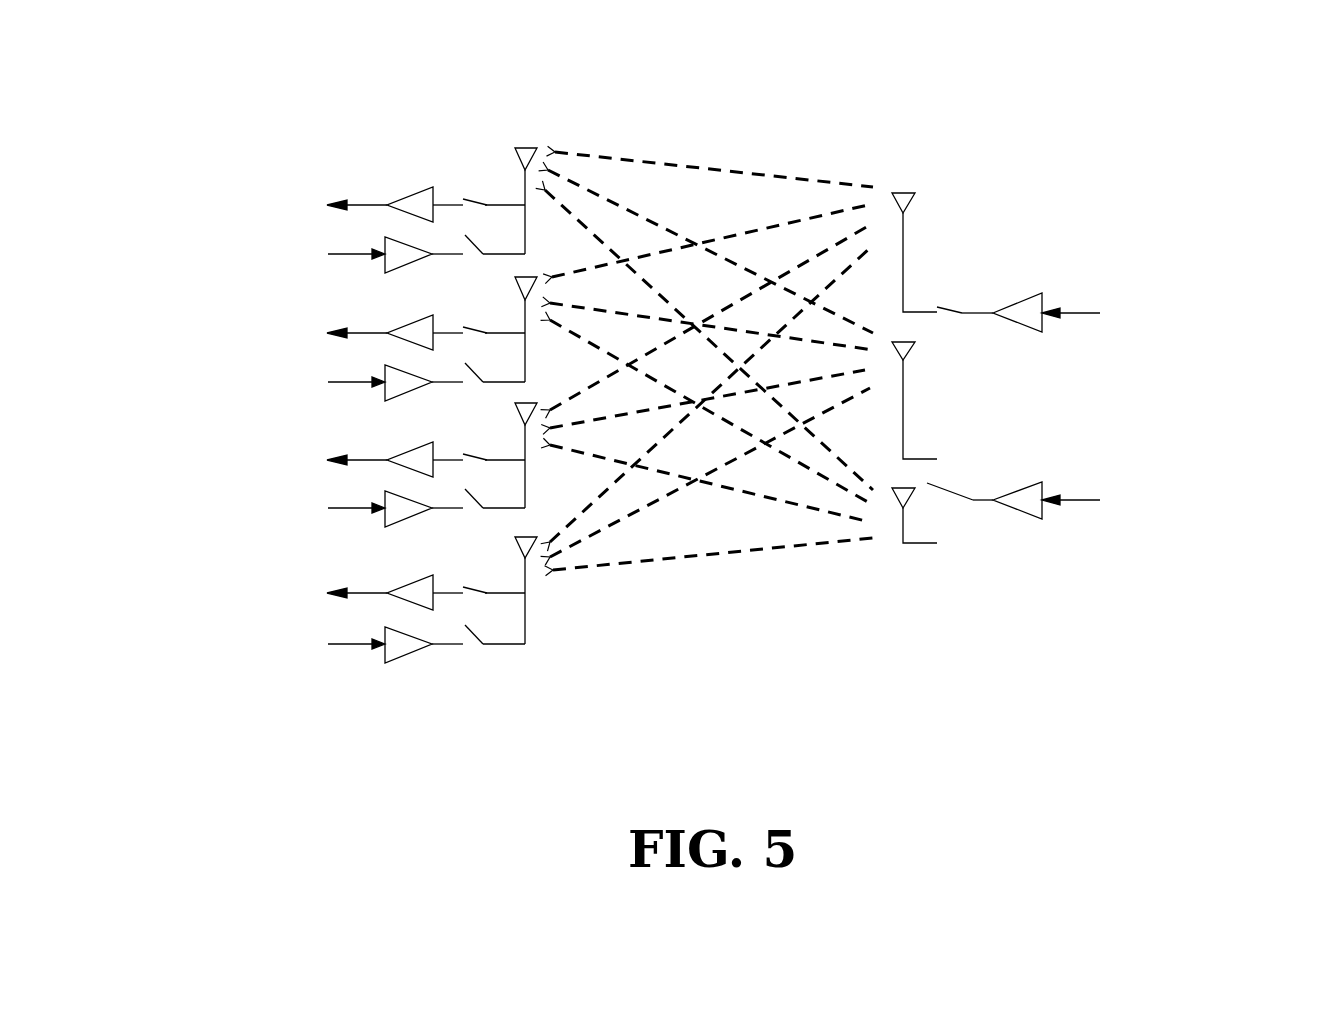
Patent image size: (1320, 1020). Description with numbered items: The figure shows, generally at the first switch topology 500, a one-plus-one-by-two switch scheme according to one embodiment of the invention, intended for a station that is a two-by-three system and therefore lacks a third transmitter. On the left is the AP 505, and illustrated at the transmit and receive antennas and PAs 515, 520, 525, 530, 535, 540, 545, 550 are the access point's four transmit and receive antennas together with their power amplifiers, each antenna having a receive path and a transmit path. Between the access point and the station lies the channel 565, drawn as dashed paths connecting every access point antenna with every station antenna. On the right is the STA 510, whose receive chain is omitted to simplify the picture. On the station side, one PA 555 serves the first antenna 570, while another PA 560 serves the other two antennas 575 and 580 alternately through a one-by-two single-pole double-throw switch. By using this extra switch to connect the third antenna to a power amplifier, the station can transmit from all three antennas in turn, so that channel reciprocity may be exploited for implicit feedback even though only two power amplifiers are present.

The first switch topology 500 is at (717, 37).
The AP 505 is at (400, 128).
The STA 510 is at (1012, 153).
The transmit and receive antenna and PA of AP 515 is at (313, 195).
The transmit and receive antenna and PA of AP 520 is at (303, 248).
The transmit and receive antenna and PA of AP 525 is at (300, 337).
The transmit and receive antenna and PA of AP 530 is at (302, 392).
The transmit and receive antenna and PA of AP 535 is at (313, 468).
The transmit and receive antenna and PA of AP 540 is at (297, 505).
The transmit and receive antenna and PA of AP 545 is at (300, 598).
The transmit and receive antenna and PA of AP 550 is at (298, 641).
The PA 555 is at (1118, 300).
The PA 560 is at (1118, 480).
The channel 565 is at (823, 122).
The first antenna 570 is at (910, 218).
The antenna 575 is at (910, 355).
The antenna 580 is at (922, 502).